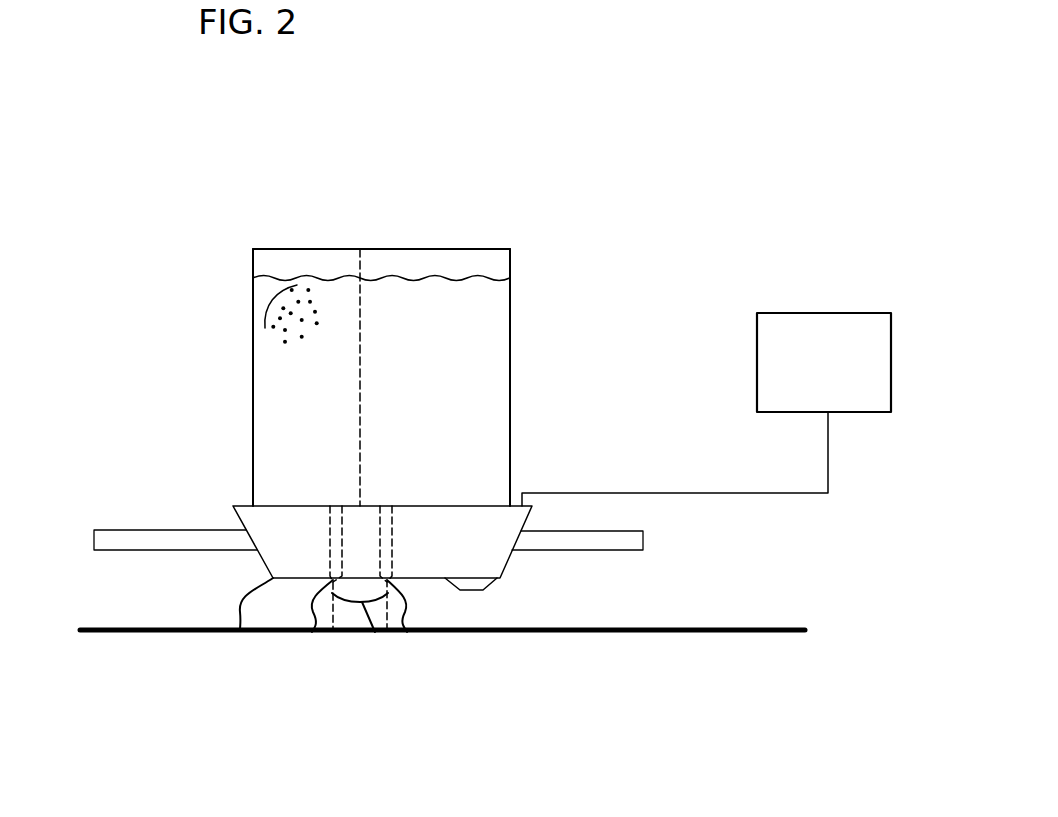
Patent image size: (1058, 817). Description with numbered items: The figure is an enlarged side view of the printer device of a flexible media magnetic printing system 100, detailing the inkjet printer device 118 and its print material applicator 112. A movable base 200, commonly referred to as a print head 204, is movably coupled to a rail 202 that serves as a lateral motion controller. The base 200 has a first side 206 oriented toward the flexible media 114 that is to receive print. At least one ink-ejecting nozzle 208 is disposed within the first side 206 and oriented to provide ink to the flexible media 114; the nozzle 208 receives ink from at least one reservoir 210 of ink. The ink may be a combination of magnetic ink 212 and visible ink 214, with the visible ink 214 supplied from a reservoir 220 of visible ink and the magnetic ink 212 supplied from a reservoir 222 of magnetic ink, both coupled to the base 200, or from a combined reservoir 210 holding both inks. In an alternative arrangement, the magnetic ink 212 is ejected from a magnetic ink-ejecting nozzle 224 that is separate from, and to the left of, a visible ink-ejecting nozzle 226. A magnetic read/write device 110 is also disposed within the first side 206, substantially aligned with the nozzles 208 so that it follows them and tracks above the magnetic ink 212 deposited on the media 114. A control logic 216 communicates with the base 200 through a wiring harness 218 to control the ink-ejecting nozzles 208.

The flexible media magnetic printing system 100 is at (709, 99).
The inkjet printer device 118 is at (478, 161).
The reservoir of ink 210 is at (371, 228).
The reservoir of visible ink 220 is at (502, 248).
The reservoir of magnetic ink 222 is at (267, 248).
The visible ink 214 is at (495, 302).
The magnetic ink 212 is at (268, 298).
The movable base 200 is at (308, 568).
The print head 204 is at (240, 571).
The ink-ejecting nozzle 208 is at (331, 578).
The rail 202 is at (143, 537).
The control logic 216 is at (793, 313).
The wiring harness 218 is at (635, 493).
The magnetic read/write device 110 is at (485, 589).
The flexible media 114 is at (112, 632).
The first side 206 is at (240, 630).
The magnetic ink-ejecting nozzle 224 is at (312, 632).
The visible ink-ejecting nozzle 226 is at (407, 632).
The print material applicator 112 is at (375, 632).